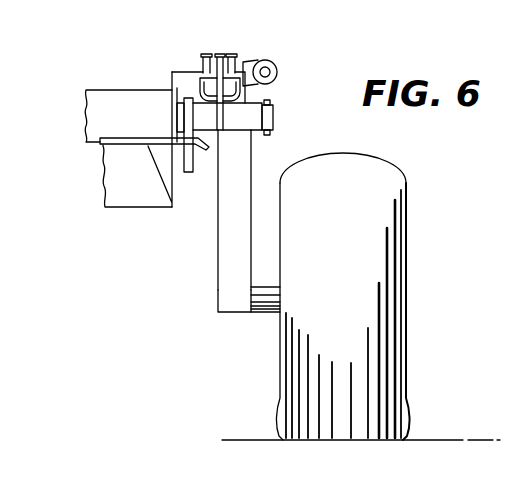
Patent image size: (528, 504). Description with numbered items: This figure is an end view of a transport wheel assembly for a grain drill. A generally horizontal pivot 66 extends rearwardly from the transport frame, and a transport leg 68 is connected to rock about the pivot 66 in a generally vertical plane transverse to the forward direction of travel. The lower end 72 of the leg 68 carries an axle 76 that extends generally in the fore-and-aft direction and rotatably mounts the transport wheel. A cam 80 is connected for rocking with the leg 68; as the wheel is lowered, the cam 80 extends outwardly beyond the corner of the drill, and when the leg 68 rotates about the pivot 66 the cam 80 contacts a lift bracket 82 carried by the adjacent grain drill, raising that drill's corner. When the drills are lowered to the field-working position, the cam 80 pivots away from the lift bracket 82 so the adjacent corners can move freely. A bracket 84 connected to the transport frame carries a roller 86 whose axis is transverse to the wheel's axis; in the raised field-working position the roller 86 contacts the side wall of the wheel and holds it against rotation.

The pivot 66 is at (275, 113).
The transport leg 68 is at (218, 248).
The lower end of the transport leg 72 is at (218, 298).
The axle 76 is at (272, 313).
The cam 80 is at (196, 173).
The lift bracket 82 is at (177, 146).
The bracket 84 is at (245, 70).
The roller 86 is at (278, 65).